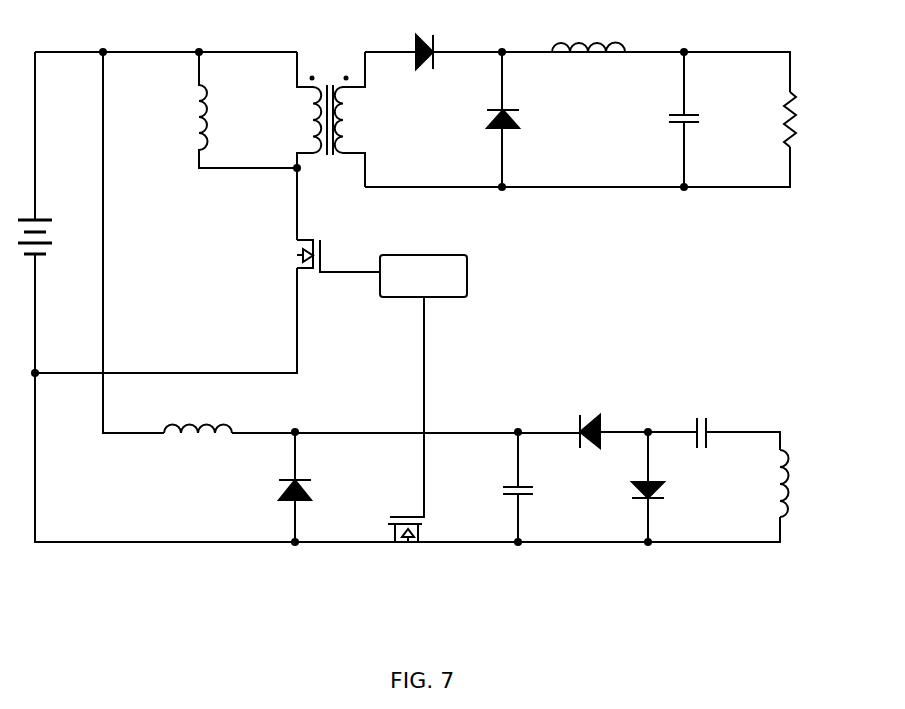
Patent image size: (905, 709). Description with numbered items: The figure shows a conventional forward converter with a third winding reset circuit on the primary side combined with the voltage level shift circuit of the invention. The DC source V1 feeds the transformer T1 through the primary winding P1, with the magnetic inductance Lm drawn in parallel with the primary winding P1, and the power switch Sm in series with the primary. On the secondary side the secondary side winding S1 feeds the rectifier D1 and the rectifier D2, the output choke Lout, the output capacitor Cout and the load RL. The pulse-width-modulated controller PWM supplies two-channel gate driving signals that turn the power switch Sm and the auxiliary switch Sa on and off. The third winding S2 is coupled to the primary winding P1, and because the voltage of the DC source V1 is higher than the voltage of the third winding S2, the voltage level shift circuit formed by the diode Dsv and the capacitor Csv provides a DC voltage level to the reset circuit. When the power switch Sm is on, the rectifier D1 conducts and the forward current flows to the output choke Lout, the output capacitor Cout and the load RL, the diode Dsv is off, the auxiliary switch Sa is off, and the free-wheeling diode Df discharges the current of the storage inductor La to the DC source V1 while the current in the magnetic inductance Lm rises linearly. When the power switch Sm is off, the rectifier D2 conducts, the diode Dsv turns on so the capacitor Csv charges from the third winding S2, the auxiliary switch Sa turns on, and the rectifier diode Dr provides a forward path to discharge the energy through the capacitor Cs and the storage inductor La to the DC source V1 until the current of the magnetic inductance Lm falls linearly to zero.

The DC source V1 is at (48, 235).
The magnetic inductance Lm is at (226, 110).
The transformer T1 is at (324, 146).
The primary winding P1 is at (295, 146).
The secondary side winding S1 is at (357, 119).
The rectifier D1 is at (419, 41).
The rectifier D2 is at (521, 119).
The output choke Lout is at (588, 38).
The output capacitor Cout is at (708, 119).
The load RL is at (806, 119).
The power switch Sm is at (338, 244).
The pulse-width-modulated controller PWM is at (423, 276).
The storage inductor La is at (197, 417).
The free-wheeling diode Df is at (307, 487).
The auxiliary switch Sa is at (405, 550).
The capacitor Cs is at (531, 487).
The rectifier diode Dr is at (581, 421).
The capacitor Csv is at (707, 421).
The diode Dsv is at (672, 487).
The third winding S2 is at (798, 483).